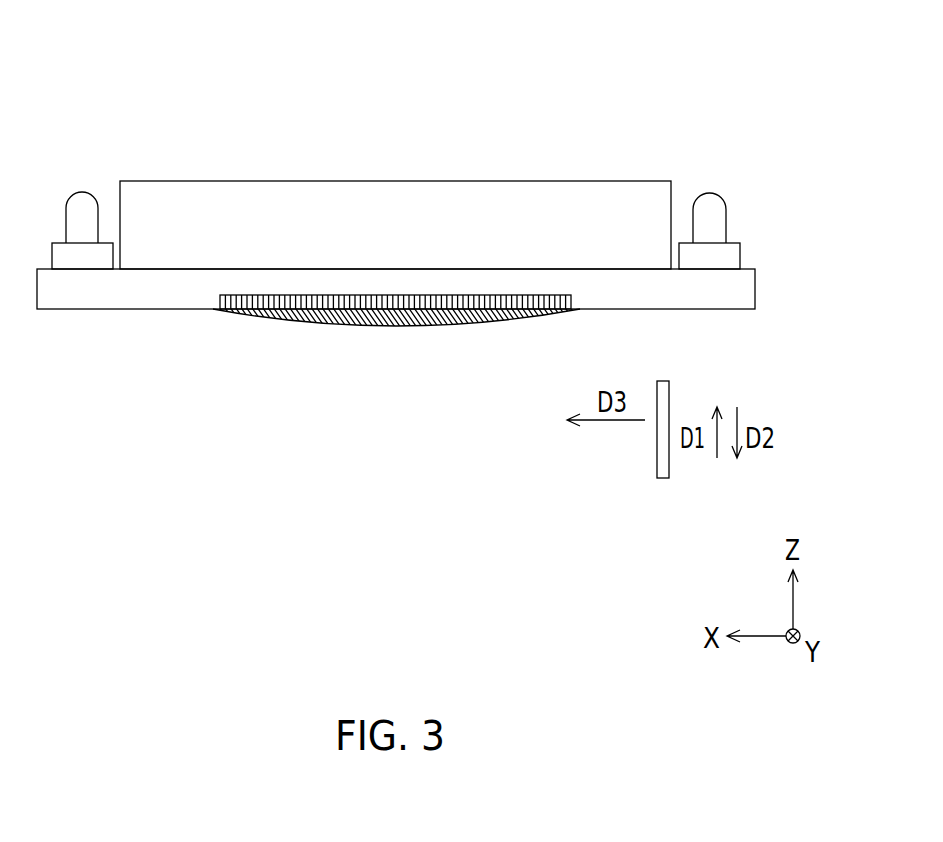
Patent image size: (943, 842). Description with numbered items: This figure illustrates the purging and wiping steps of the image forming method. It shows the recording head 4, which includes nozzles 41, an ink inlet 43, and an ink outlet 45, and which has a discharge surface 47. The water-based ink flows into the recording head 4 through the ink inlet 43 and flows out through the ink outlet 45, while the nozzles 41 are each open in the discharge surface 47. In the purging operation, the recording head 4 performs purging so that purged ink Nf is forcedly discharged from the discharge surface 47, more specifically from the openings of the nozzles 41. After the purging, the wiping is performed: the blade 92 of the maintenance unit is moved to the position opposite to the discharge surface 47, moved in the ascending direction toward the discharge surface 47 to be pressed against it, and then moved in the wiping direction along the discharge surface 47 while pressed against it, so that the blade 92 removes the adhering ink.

The recording head 4 is at (395, 196).
The nozzles 41 is at (313, 292).
The ink inlet 43 is at (70, 195).
The ink outlet 45 is at (723, 198).
The discharge surface 47 is at (718, 311).
The purged ink Nf is at (345, 326).
The blade 92 is at (657, 441).